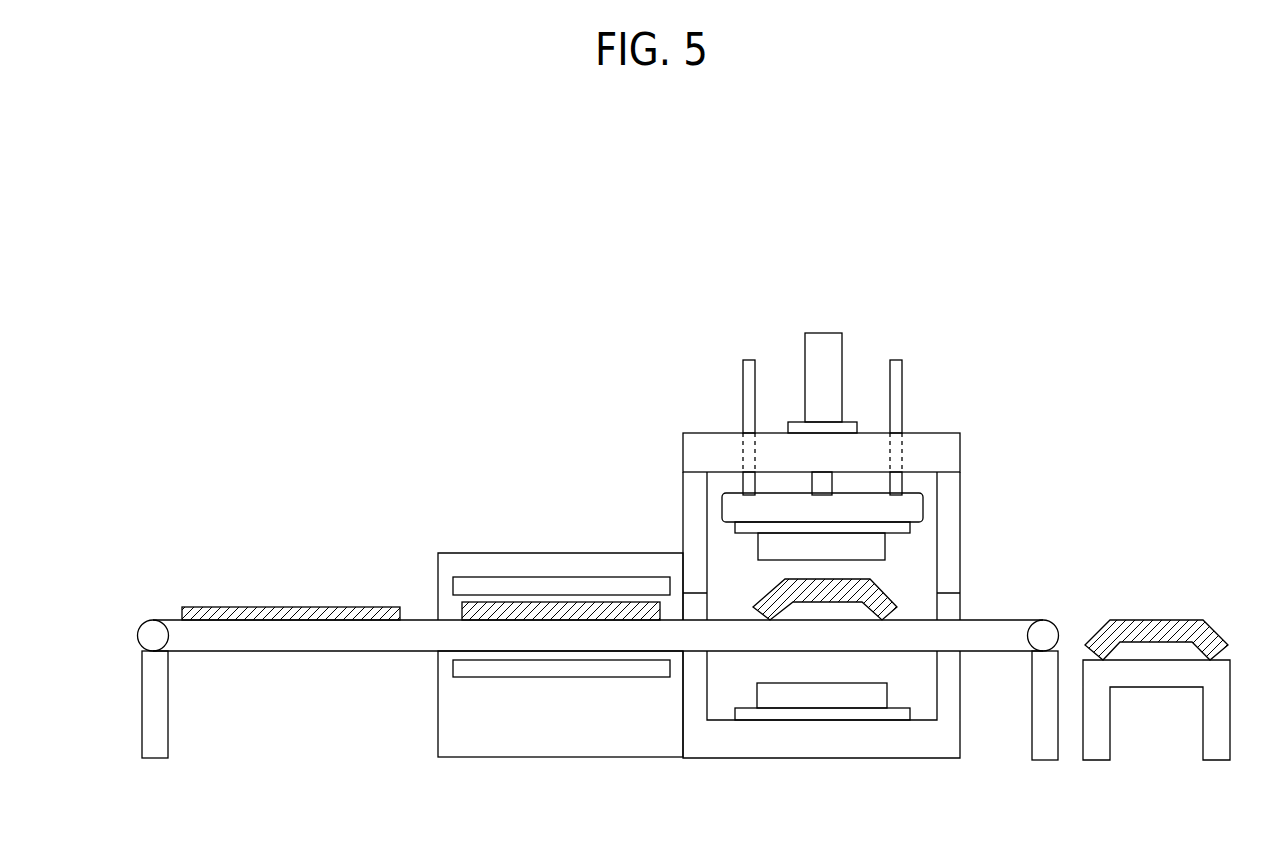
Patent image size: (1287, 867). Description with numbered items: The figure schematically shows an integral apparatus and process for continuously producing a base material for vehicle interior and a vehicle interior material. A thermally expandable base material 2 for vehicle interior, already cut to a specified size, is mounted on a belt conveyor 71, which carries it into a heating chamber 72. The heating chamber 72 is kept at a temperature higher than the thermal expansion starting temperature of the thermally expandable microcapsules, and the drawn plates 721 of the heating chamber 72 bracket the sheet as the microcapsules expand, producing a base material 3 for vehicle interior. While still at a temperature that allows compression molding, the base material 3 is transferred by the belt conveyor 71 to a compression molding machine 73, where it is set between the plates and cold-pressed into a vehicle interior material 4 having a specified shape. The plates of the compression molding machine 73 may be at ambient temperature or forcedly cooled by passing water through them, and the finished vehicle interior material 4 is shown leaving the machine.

The thermally expandable base material for vehicle interior 2 is at (290, 606).
The base material for vehicle interior 3 is at (575, 610).
The vehicle interior material 4 is at (887, 592).
The belt conveyor 71 is at (230, 635).
The heating chamber 72 is at (522, 541).
The heating plates 721 is at (634, 578).
The compression molding machine 73 is at (943, 415).